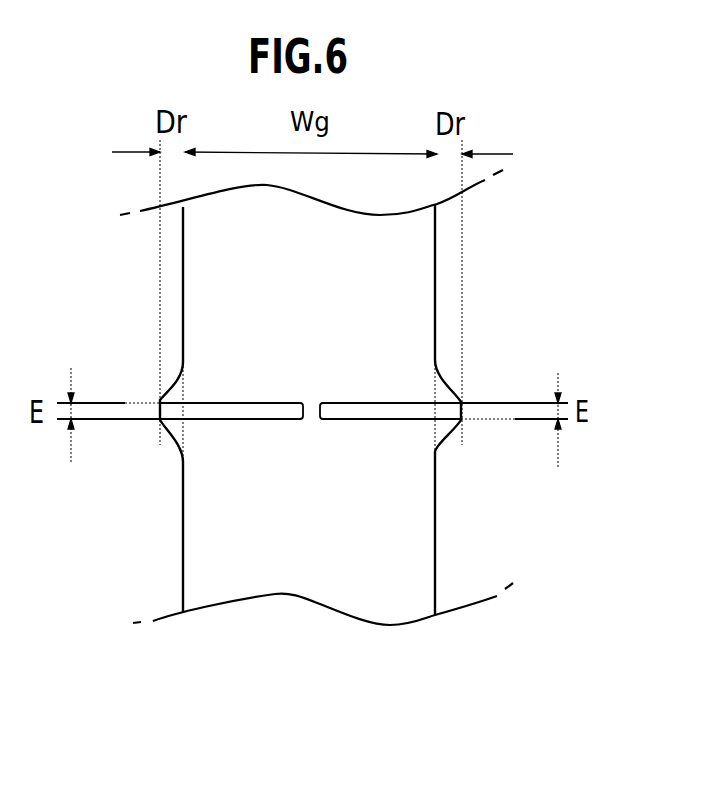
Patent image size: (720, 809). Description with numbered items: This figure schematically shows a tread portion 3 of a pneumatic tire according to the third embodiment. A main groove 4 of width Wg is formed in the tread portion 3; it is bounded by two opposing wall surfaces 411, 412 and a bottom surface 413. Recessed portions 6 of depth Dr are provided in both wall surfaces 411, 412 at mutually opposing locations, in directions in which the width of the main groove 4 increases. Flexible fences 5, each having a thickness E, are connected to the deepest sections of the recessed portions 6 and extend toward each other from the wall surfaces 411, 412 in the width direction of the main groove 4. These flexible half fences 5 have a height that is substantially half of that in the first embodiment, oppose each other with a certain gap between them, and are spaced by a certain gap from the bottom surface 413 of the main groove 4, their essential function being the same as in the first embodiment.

The tread portion 3 is at (131, 534).
The main groove 4 is at (325, 585).
The flexible fence 5 is at (243, 418).
The recessed portion 6 is at (176, 383).
The wall surface 411 is at (183, 569).
The wall surface 412 is at (435, 570).
The bottom surface 413 is at (320, 534).